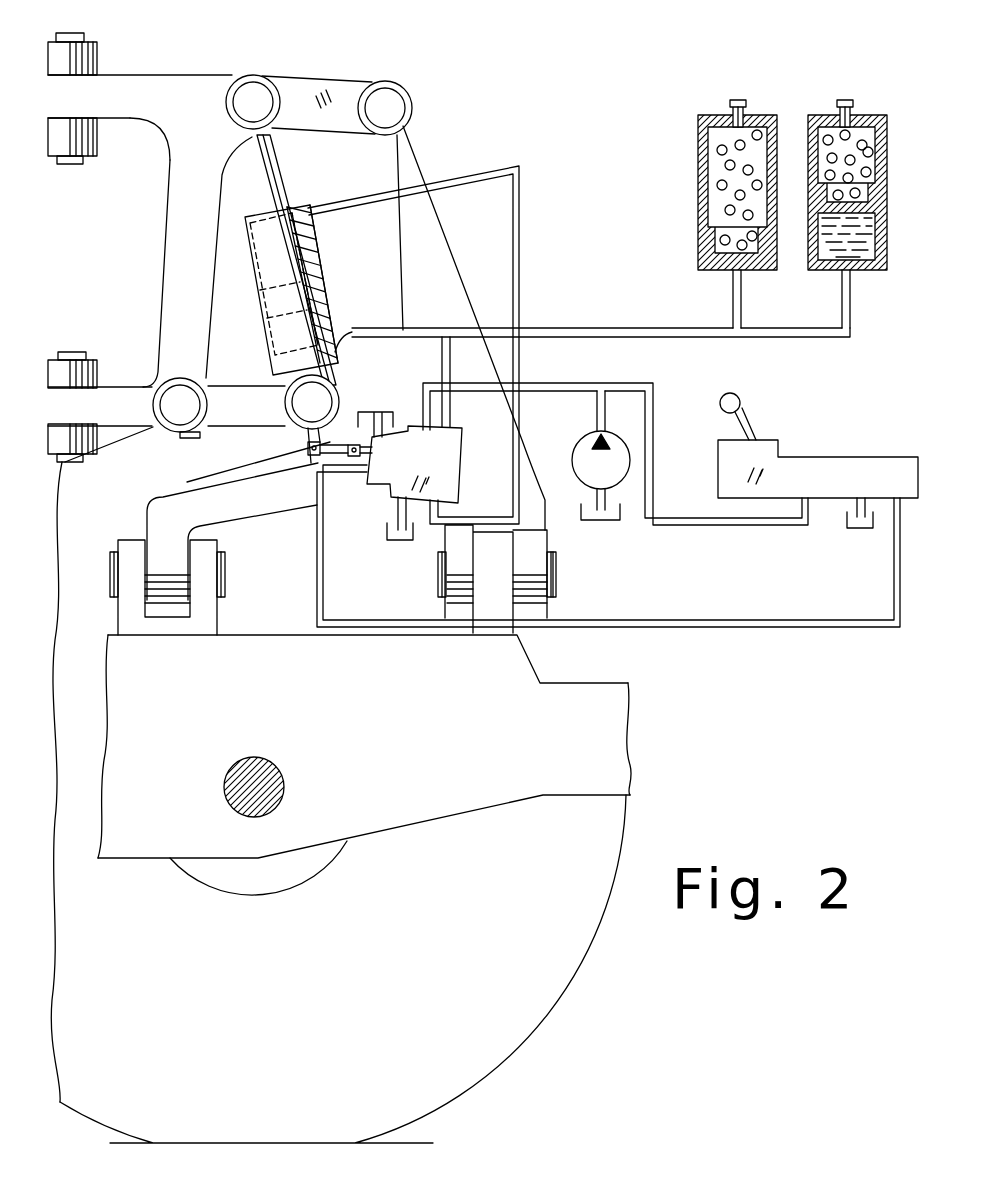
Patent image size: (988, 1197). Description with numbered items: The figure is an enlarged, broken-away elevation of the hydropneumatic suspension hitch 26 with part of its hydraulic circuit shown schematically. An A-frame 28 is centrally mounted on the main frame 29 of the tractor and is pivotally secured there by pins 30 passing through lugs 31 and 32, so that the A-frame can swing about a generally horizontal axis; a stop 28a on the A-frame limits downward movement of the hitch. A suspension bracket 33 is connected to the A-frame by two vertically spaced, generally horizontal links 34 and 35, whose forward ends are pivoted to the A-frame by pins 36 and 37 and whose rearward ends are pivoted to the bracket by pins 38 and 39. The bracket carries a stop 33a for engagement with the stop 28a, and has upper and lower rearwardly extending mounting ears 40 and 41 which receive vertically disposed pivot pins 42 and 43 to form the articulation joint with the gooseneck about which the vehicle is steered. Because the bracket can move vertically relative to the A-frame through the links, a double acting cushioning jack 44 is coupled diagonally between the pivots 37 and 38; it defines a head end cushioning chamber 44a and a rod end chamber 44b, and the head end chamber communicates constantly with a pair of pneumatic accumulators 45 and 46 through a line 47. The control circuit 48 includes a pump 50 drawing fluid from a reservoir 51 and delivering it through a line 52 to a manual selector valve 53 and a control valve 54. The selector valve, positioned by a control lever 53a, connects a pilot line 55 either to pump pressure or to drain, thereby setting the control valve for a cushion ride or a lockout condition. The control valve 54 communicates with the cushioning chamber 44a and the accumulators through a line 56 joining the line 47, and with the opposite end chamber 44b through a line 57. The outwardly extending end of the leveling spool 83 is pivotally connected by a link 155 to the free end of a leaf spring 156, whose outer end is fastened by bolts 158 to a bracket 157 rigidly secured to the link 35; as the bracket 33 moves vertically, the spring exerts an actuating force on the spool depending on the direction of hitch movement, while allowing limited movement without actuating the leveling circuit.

The hydropneumatic suspension hitch 26 is at (379, 78).
The A-frame 28 is at (425, 170).
The stop 28a is at (212, 473).
The main frame 29 is at (281, 703).
The pins 30 is at (226, 576).
The lug 31 is at (202, 630).
The lug 32 is at (496, 635).
The suspension bracket 33 is at (168, 182).
The stop 33a is at (185, 438).
The link 34 is at (330, 95).
The link 35 is at (264, 418).
The pin 36 is at (399, 112).
The pin 37 is at (295, 398).
The pin 38 is at (249, 96).
The pin 39 is at (188, 400).
The upper mounting ear 40 is at (82, 104).
The lower mounting ear 41 is at (84, 400).
The pivot pin 42 is at (68, 40).
The pivot pin 43 is at (70, 354).
The cushioning jack 44 is at (270, 322).
The head end chamber 44a is at (285, 345).
The rod end chamber 44b is at (262, 246).
The pneumatic accumulator 45 is at (698, 163).
The pneumatic accumulator 46 is at (817, 117).
The line 47 is at (534, 330).
The control circuit 48 is at (672, 648).
The pump 50 is at (583, 440).
The reservoir 51 is at (601, 523).
The line 52 is at (543, 388).
The manual selector valve 53 is at (802, 460).
The control lever 53a is at (733, 398).
The control valve 54 is at (447, 463).
The line 55 is at (783, 628).
The line 56 is at (441, 358).
The line 57 is at (519, 267).
The leveling spool 83 is at (372, 456).
The link 155 is at (311, 464).
The leaf spring 156 is at (310, 450).
The bracket 157 is at (338, 320).
The bolts 158 is at (342, 360).